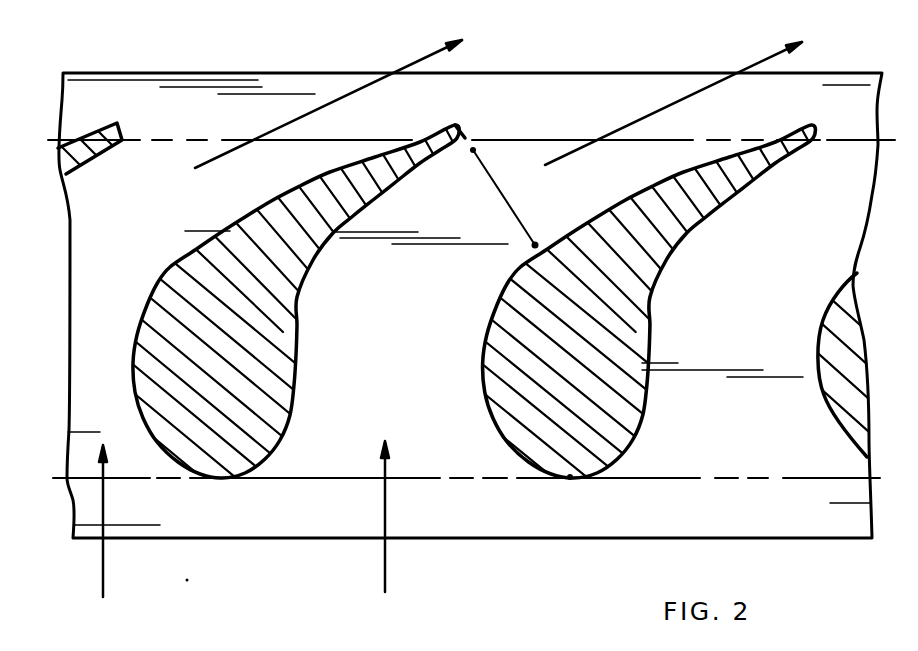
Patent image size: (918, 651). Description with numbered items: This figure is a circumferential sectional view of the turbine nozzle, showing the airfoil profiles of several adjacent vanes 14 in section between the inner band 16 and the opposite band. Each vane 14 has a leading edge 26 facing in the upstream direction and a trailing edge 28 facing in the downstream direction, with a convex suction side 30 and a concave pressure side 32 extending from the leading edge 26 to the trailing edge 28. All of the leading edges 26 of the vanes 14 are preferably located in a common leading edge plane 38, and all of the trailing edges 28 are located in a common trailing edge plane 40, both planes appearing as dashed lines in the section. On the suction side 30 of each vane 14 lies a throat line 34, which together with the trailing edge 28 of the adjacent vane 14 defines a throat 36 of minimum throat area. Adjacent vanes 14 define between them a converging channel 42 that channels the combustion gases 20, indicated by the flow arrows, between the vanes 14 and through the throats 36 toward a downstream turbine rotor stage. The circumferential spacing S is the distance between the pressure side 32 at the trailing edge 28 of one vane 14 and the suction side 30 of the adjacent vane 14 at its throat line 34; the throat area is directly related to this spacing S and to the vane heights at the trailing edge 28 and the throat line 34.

The vane 14 is at (738, 202).
The inner band 16 is at (858, 73).
The combustion gases 20 is at (414, 57).
The leading edge 26 is at (222, 478).
The trailing edge 28 is at (467, 130).
The suction side 30 is at (440, 325).
The pressure side 32 is at (440, 325).
The throat line 34 is at (535, 245).
The throat 36 is at (468, 214).
The leading edge plane 38 is at (680, 478).
The trailing edge plane 40 is at (558, 140).
The converging channel 42 is at (414, 366).
The circumferential spacing S is at (516, 212).